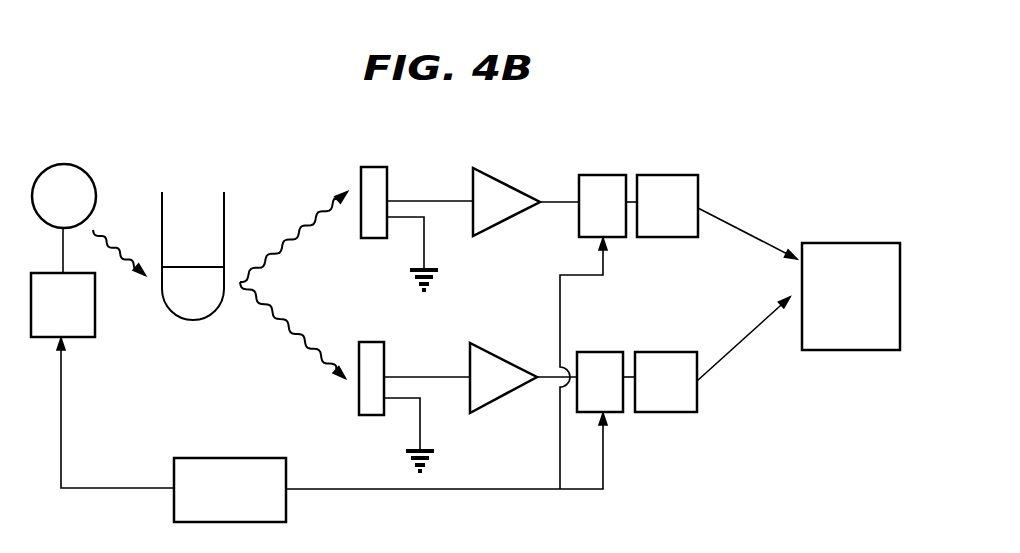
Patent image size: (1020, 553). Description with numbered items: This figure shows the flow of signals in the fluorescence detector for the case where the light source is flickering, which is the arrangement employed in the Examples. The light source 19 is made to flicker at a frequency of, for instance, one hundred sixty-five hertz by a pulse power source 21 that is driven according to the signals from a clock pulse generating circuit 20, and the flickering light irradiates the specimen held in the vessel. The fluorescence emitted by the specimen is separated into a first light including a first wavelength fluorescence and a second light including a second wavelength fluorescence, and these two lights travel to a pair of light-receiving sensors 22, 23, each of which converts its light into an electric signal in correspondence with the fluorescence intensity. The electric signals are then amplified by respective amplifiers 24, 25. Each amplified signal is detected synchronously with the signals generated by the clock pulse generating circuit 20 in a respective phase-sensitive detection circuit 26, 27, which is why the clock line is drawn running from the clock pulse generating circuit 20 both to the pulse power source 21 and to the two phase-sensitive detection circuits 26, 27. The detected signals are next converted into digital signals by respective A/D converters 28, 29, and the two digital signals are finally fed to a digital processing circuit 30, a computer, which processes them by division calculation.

The light source 19 is at (52, 210).
The clock pulse generating circuit 20 is at (218, 498).
The pulse power source 21 is at (50, 319).
The light-receiving sensor 22 is at (361, 186).
The light-receiving sensor 23 is at (370, 342).
The amplifier 24 is at (502, 182).
The amplifier 25 is at (500, 358).
The phase-sensitive detection circuit 26 is at (590, 214).
The phase-sensitive detection circuit 27 is at (588, 390).
The A/D converter 28 is at (655, 214).
The A/D converter 29 is at (654, 390).
The digital processing circuit 30 is at (839, 304).